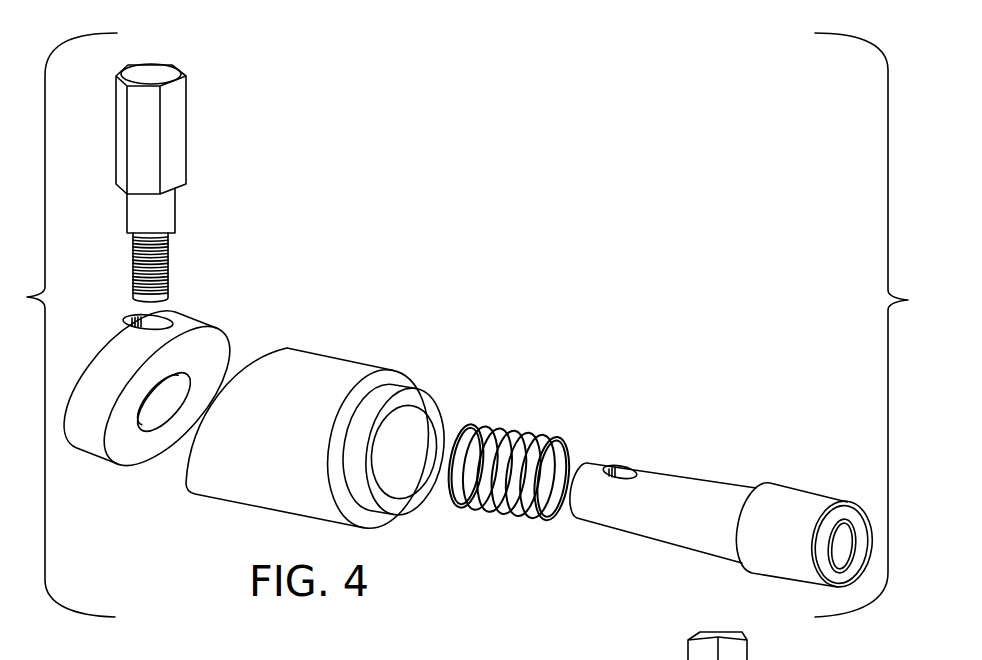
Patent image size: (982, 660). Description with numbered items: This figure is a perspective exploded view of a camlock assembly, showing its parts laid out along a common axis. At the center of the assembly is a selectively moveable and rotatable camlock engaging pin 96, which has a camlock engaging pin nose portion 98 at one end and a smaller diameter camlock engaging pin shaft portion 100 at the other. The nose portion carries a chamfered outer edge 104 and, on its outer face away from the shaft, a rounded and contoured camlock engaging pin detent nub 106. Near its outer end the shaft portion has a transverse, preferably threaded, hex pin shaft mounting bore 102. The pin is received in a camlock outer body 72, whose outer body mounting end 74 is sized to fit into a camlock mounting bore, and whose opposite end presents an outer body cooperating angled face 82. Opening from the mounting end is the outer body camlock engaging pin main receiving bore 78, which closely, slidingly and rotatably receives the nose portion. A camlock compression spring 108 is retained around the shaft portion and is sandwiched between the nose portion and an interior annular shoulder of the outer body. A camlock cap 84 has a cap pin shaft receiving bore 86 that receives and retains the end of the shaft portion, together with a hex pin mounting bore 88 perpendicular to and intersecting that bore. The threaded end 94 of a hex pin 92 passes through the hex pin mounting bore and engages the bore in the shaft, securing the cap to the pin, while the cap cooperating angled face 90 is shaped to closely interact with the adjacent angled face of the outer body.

The camlock outer body 72 is at (335, 424).
The outer body mounting end 74 is at (427, 403).
The outer body camlock engaging pin main receiving bore 78 is at (408, 483).
The outer body cooperating angled face 82 is at (261, 356).
The camlock cap 84 is at (158, 409).
The cap pin shaft receiving bore 86 is at (162, 403).
The hex pin mounting bore 88 is at (167, 323).
The cap cooperating angled face 90 is at (135, 458).
The hex pin 92 is at (175, 150).
The threaded end 94 is at (168, 258).
The camlock engaging pin 96 is at (724, 509).
The camlock engaging pin nose portion 98 is at (803, 500).
The camlock engaging pin shaft portion 100 is at (653, 527).
The hex pin shaft mounting bore 102 is at (623, 465).
The chamfered outer edge 104 is at (823, 586).
The camlock engaging pin detent nub 106 is at (850, 547).
The camlock compression spring 108 is at (502, 518).